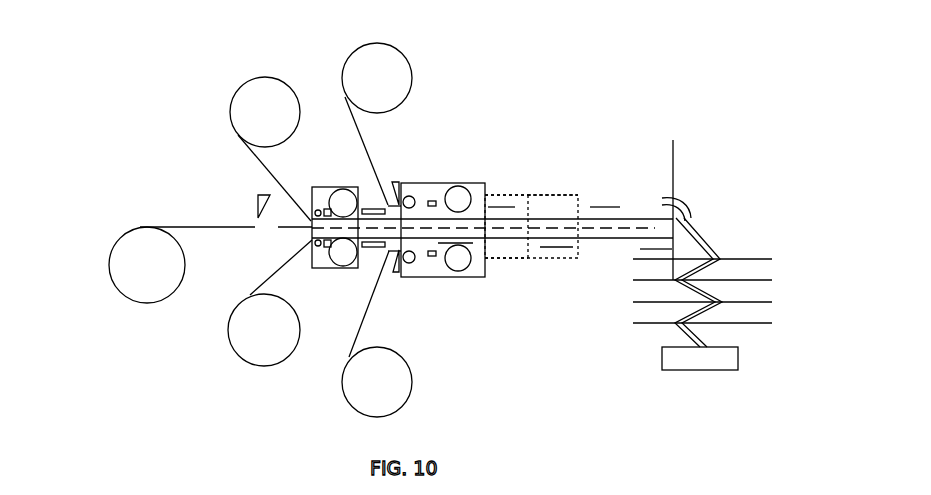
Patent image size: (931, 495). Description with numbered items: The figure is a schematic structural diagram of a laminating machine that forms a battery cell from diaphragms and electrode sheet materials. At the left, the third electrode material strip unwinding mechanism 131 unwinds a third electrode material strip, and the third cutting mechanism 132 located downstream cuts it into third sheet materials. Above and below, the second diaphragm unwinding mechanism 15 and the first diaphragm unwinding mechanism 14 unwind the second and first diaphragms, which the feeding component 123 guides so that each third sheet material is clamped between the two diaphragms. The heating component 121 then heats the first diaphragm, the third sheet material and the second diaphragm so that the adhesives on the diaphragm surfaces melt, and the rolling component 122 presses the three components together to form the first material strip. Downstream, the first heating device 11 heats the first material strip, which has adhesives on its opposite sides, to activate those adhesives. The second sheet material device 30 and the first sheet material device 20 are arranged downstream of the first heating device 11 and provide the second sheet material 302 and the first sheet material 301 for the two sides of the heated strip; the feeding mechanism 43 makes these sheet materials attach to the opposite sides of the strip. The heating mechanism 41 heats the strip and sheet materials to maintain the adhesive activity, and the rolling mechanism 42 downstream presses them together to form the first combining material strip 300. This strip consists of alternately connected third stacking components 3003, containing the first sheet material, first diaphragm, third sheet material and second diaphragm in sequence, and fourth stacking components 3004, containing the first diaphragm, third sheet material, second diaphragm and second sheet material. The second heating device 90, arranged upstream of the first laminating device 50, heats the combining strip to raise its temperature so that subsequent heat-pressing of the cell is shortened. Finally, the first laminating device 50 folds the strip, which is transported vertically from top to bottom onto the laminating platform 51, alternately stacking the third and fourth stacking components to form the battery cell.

The second diaphragm unwinding mechanism 15 is at (230, 113).
The third electrode material strip unwinding mechanism 131 is at (109, 265).
The first diaphragm unwinding mechanism 14 is at (229, 341).
The second sheet material device 30 is at (436, 80).
The first sheet material device 20 is at (426, 348).
The third cutting mechanism 132 is at (257, 207).
The heating component 121 is at (318, 209).
The rolling component 122 is at (343, 189).
The feeding component 123 is at (317, 247).
The first heating device 11 is at (378, 247).
The heating mechanism 41 is at (427, 199).
The rolling mechanism 42 is at (458, 186).
The feeding mechanism 43 is at (409, 263).
The first combining material strip 300 is at (537, 123).
The second sheet material 302 is at (505, 196).
The third stacking component 3003 is at (560, 196).
The fourth stacking component 3004 is at (507, 259).
The first sheet material 301 is at (563, 249).
The second heating device 90 is at (662, 200).
The first laminating device 50 is at (750, 178).
The laminating platform 51 is at (697, 372).